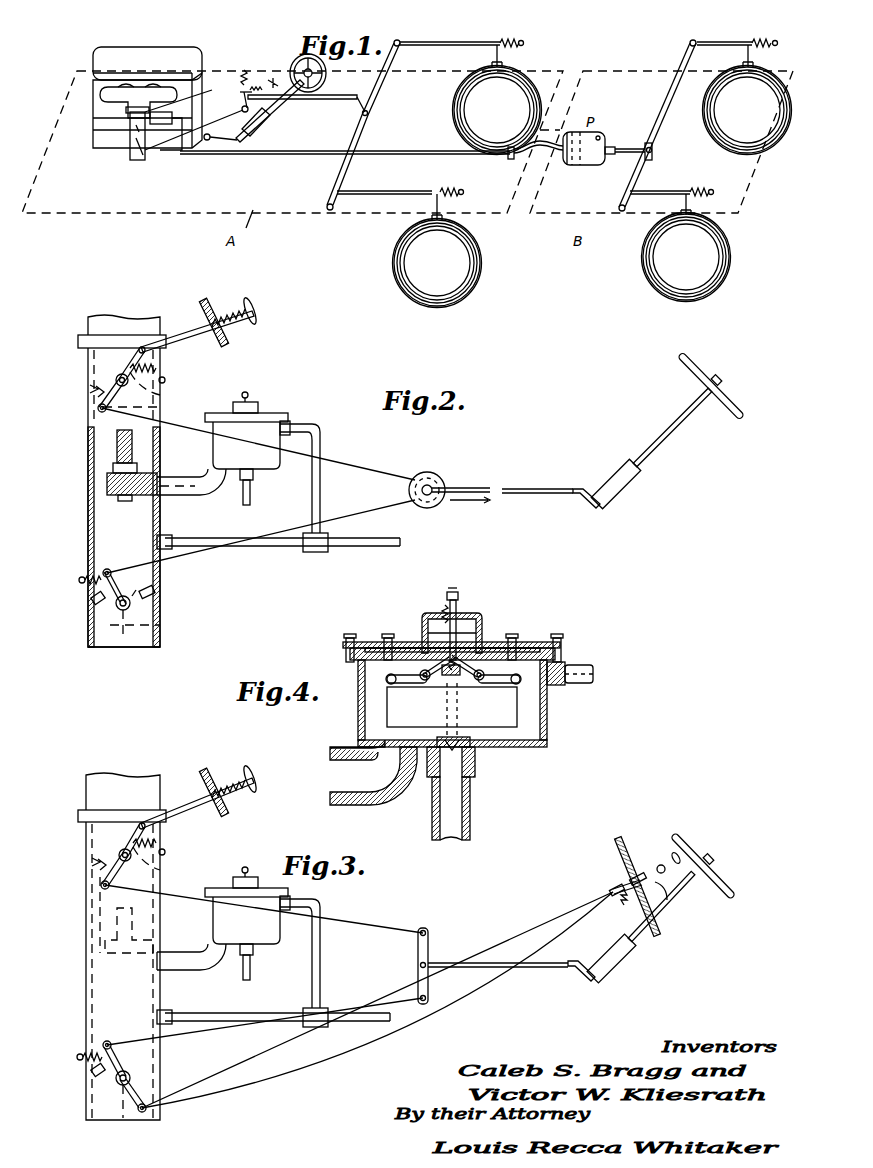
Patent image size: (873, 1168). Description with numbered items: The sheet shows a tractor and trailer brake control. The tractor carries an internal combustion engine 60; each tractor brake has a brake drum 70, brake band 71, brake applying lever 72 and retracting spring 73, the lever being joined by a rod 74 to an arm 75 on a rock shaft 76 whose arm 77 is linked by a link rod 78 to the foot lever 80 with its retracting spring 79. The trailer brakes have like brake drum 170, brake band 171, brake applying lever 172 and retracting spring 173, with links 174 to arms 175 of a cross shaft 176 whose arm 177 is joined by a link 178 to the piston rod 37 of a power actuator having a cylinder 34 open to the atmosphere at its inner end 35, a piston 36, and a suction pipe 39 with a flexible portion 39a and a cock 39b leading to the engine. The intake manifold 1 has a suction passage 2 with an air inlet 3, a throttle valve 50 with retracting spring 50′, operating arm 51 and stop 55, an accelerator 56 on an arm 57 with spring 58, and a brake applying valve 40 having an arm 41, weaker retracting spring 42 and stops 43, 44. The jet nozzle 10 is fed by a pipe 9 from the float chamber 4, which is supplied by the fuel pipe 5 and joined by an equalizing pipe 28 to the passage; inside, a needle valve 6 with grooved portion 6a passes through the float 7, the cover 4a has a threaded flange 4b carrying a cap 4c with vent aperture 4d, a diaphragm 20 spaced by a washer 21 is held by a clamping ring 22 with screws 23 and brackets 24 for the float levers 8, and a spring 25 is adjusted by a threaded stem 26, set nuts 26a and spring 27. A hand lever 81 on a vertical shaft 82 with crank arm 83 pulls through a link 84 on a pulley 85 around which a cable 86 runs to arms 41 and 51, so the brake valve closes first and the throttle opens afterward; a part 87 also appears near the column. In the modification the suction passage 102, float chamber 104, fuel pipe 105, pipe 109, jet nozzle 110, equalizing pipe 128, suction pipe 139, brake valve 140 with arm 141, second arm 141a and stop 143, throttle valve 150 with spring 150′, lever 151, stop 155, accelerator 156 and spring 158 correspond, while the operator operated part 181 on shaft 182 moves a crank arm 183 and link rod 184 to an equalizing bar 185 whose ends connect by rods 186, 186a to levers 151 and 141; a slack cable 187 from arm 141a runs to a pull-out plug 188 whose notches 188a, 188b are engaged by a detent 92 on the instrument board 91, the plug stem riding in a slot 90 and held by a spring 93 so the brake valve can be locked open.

In FIG. 1, the intake manifold 1 is at (100, 92).
In FIG. 1, the suction passage 2 is at (132, 135).
In FIG. 2, the suction passage 2 is at (88, 508).
In FIG. 1, the air inlet 3 is at (140, 158).
In FIG. 2, the air inlet 3 is at (140, 648).
In FIG. 1, the carburetor float chamber 4 is at (178, 116).
In FIG. 2, the carburetor float chamber 4 is at (265, 428).
In FIG. 4, the carburetor float chamber 4 is at (546, 730).
In FIG. 4, the closed top 4a is at (497, 648).
In FIG. 4, the threaded flange 4b is at (392, 637).
In FIG. 4, the cap 4c is at (482, 620).
In FIG. 4, the vent aperture 4d is at (486, 628).
In FIG. 2, the liquid fuel supply pipe 5 is at (252, 492).
In FIG. 4, the liquid fuel supply pipe 5 is at (475, 814).
In FIG. 4, the needle valve 6 is at (470, 745).
In FIG. 4, the grooved portion 6a is at (447, 690).
In FIG. 4, the float 7 is at (395, 713).
In FIG. 4, the float engaging levers 8 is at (393, 680).
In FIG. 2, the pipe 9 is at (200, 493).
In FIG. 4, the pipe 9 is at (337, 778).
In FIG. 2, the jet nozzle 10 is at (117, 441).
In FIG. 4, the flexible diaphragm 20 is at (532, 645).
In FIG. 4, the annular ring or washer 21 is at (560, 646).
In FIG. 4, the clamping ring 22 is at (566, 668).
In FIG. 4, the screws 23 is at (350, 637).
In FIG. 4, the brackets 24 is at (415, 672).
In FIG. 4, the spring 25 is at (457, 622).
In FIG. 4, the threaded stem 26 is at (453, 591).
In FIG. 4, the set nuts 26a is at (449, 588).
In FIG. 4, the spring 27 is at (445, 607).
In FIG. 2, the equalizing pipe 28 is at (320, 500).
In FIG. 4, the equalizing pipe 28 is at (592, 676).
In FIG. 1, the cylinder 34 is at (575, 166).
In FIG. 1, the open inner end 35 is at (601, 135).
In FIG. 1, the piston 36 is at (570, 132).
In FIG. 1, the piston rod 37 is at (610, 156).
In FIG. 1, the suction pipe 39 is at (300, 154).
In FIG. 2, the suction pipe 39 is at (290, 548).
In FIG. 1, the flexible portion 39a is at (540, 152).
In FIG. 1, the cock 39b is at (508, 158).
In FIG. 2, the brake applying valve 40 is at (160, 627).
In FIG. 2, the operating arm 41 is at (105, 570).
In FIG. 2, the retracting spring 42 is at (82, 578).
In FIG. 2, the adjustable stop 43 is at (97, 601).
In FIG. 2, the adjustable stop 44 is at (152, 593).
In FIG. 2, the throttle valve 50 is at (160, 400).
In FIG. 2, the retracting spring 50′ is at (160, 372).
In FIG. 2, the operating arm 51 is at (98, 407).
In FIG. 2, the adjustable stop 55 is at (90, 389).
In FIG. 2, the foot operated accelerator 56 is at (254, 310).
In FIG. 2, the arm 57 is at (130, 362).
In FIG. 2, the retracting spring 58 is at (226, 306).
In FIG. 1, the internal combustion engine 60 is at (160, 52).
In FIG. 1, the brake drum 70 is at (467, 186).
In FIG. 1, the brake band 71 is at (533, 85).
In FIG. 1, the brake applying lever 72 is at (493, 60).
In FIG. 1, the retracting spring 73 is at (510, 41).
In FIG. 1, the rod 74 is at (465, 43).
In FIG. 1, the arm 75 is at (396, 44).
In FIG. 1, the rock shaft 76 is at (346, 168).
In FIG. 1, the arm 77 is at (362, 108).
In FIG. 1, the link rod 78 is at (303, 100).
In FIG. 1, the retracting spring 79 is at (273, 80).
In FIG. 1, the foot lever 80 is at (244, 72).
In FIG. 1, the hand lever 81 is at (326, 73).
In FIG. 2, the hand lever 81 is at (726, 390).
In FIG. 1, the vertical shaft 82 is at (243, 138).
In FIG. 2, the vertical shaft 82 is at (610, 500).
In FIG. 2, the crank arm 83 is at (583, 498).
In FIG. 2, the link or cable 84 is at (512, 490).
In FIG. 2, the pulley 85 is at (436, 480).
In FIG. 2, the cable 86 is at (373, 470).
In FIG. 1, the lever 87 is at (245, 112).
In FIG. 3, the slot 90 is at (632, 880).
In FIG. 3, the instrument board 91 is at (622, 840).
In FIG. 3, the locking detent 92 is at (660, 865).
In FIG. 3, the spring 93 is at (672, 898).
In FIG. 3, the suction passage 102 is at (88, 986).
In FIG. 3, the float chamber 104 is at (270, 935).
In FIG. 3, the fuel supply pipe 105 is at (252, 967).
In FIG. 3, the pipe 109 is at (200, 970).
In FIG. 3, the jet nozzle 110 is at (105, 930).
In FIG. 3, the equalizing pipe 128 is at (320, 971).
In FIG. 3, the suction pipe 139 is at (243, 1013).
In FIG. 3, the brake valve 140 is at (114, 1122).
In FIG. 3, the brake valve actuating lever 141 is at (102, 1044).
In FIG. 3, the second arm 141a is at (140, 1100).
In FIG. 3, the stop 143 is at (96, 1073).
In FIG. 3, the throttle valve 150 is at (158, 875).
In FIG. 3, the retracting spring 150′ is at (160, 847).
In FIG. 3, the throttle valve actuating lever 151 is at (100, 884).
In FIG. 3, the adjustable stop 155 is at (92, 862).
In FIG. 3, the foot operated accelerator 156 is at (254, 778).
In FIG. 3, the retracting spring 158 is at (226, 776).
In FIG. 1, the brake drum 170 is at (716, 183).
In FIG. 1, the brake band 171 is at (770, 148).
In FIG. 1, the brake applying lever 172 is at (744, 62).
In FIG. 1, the retracting spring 173 is at (765, 38).
In FIG. 1, the links 174 is at (725, 43).
In FIG. 1, the arms 175 is at (691, 44).
In FIG. 1, the cross shaft 176 is at (662, 120).
In FIG. 1, the arm 177 is at (653, 152).
In FIG. 1, the link 178 is at (650, 142).
In FIG. 3, the operator operated part 181 is at (712, 862).
In FIG. 3, the vertical shaft 182 is at (596, 983).
In FIG. 3, the crank arm 183 is at (580, 972).
In FIG. 3, the link rod 184 is at (524, 968).
In FIG. 3, the equalizing bar 185 is at (430, 952).
In FIG. 3, the rod 186 is at (365, 924).
In FIG. 3, the rod 186a is at (262, 1022).
In FIG. 3, the slack cable 187 is at (378, 1040).
In FIG. 3, the pull-out plug 188 is at (623, 898).
In FIG. 3, the notch 188a is at (610, 891).
In FIG. 3, the notch 188b is at (682, 850).